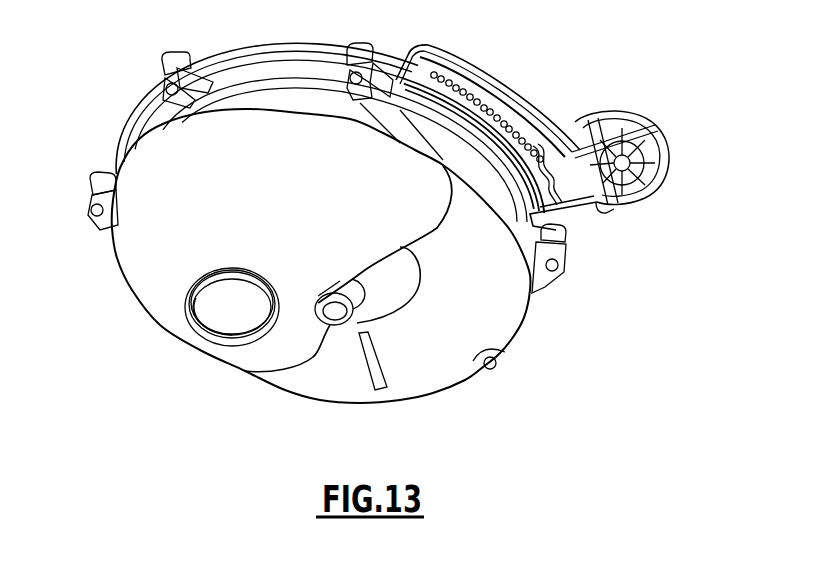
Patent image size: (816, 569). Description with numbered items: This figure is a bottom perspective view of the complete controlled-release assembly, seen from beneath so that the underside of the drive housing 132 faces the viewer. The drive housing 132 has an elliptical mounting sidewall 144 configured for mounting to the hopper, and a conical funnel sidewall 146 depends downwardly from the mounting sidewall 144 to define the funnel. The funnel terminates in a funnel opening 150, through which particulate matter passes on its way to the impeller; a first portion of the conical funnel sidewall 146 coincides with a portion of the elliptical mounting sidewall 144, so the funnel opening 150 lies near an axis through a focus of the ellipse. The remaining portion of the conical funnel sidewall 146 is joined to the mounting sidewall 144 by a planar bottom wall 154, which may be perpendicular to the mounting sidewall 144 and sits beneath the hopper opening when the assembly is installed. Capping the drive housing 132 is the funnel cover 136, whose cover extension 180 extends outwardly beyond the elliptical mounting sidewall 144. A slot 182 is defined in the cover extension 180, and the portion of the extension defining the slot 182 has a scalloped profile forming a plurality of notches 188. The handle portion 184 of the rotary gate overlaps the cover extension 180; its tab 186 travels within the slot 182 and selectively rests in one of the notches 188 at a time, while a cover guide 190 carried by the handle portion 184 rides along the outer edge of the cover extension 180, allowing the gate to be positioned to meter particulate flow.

The drive housing 132 is at (143, 147).
The funnel cover 136 is at (293, 45).
The elliptical mounting sidewall 144 is at (228, 97).
The conical funnel sidewall 146 is at (140, 273).
The funnel opening 150 is at (230, 333).
The planar bottom wall 154 is at (480, 358).
The cover extension 180 is at (407, 53).
The slot 182 is at (453, 83).
The handle portion 184 is at (650, 133).
The tab 186 is at (570, 207).
The notches 188 is at (513, 113).
The cover guide 190 is at (600, 200).